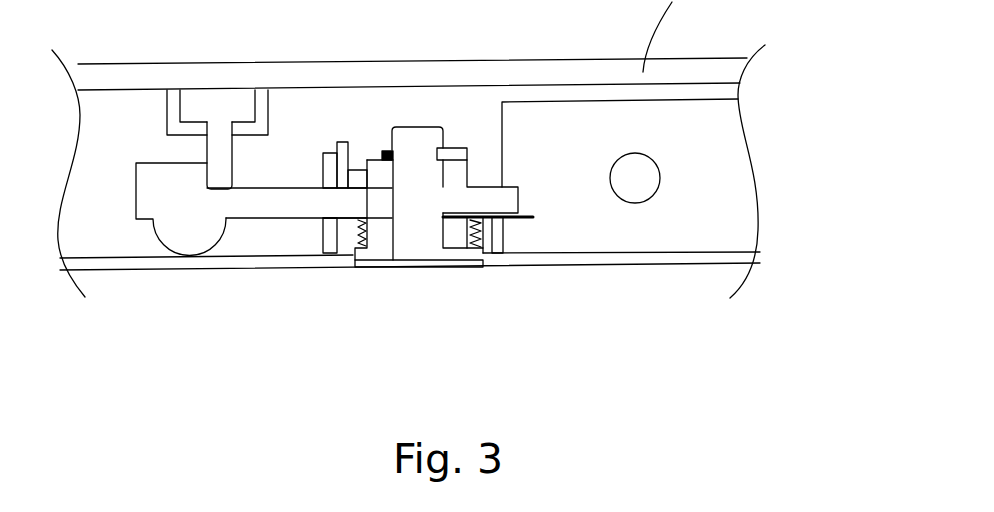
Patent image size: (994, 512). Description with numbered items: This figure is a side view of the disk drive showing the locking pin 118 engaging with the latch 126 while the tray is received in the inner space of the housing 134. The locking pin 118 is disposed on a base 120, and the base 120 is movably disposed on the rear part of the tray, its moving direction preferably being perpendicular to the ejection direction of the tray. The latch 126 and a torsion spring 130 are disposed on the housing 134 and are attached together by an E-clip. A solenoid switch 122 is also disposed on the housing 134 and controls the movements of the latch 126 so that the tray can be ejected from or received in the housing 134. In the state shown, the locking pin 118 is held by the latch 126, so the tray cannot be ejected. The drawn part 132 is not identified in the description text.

The locking pin 118 is at (217, 168).
The base 120 is at (215, 112).
The solenoid switch 122 is at (733, 165).
The latch 126 is at (200, 236).
The torsion spring 130 is at (473, 246).
The plunger assembly 132 is at (430, 245).
The housing 134 is at (643, 258).